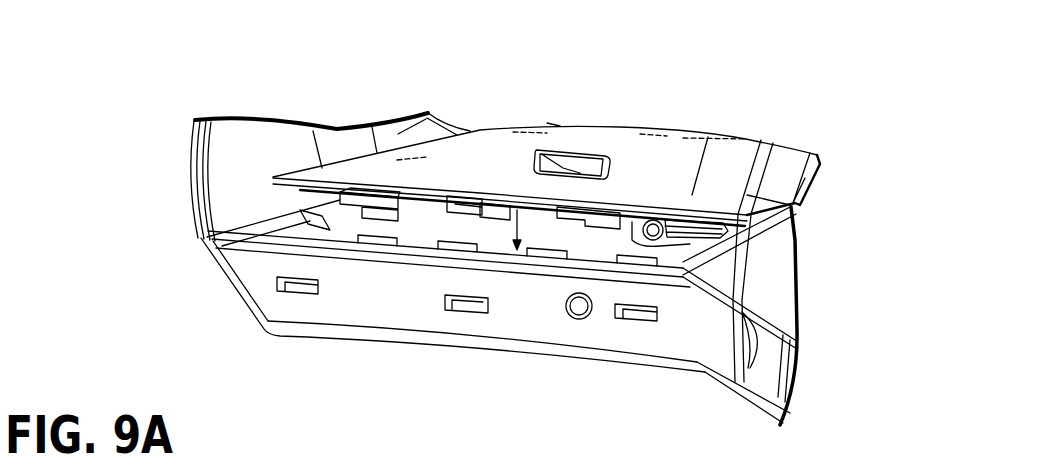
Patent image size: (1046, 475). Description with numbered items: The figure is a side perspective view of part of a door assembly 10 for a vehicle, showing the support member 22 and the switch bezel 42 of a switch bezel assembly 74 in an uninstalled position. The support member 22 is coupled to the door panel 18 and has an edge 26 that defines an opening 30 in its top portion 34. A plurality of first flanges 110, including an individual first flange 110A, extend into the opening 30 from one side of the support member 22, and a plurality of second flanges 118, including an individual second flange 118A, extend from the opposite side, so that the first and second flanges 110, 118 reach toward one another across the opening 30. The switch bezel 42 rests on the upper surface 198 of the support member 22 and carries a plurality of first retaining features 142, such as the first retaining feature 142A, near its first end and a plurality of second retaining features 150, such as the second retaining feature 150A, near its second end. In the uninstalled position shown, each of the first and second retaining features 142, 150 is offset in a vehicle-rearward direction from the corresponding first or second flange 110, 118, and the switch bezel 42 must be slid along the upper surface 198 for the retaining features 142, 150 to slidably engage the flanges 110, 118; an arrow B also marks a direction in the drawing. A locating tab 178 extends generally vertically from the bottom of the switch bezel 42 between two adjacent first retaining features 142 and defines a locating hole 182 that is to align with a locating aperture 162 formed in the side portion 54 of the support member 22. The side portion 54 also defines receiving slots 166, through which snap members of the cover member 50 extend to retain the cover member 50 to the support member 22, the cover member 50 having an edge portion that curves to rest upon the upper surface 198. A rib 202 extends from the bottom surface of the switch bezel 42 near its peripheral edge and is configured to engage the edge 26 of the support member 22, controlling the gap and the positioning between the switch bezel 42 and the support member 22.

The door assembly 10 is at (724, 85).
The door panel 18 is at (235, 117).
The support member 22 is at (503, 338).
The edge 26 is at (800, 276).
The opening 30 is at (331, 227).
The top portion 34 is at (258, 231).
The switch bezel 42 is at (673, 172).
The cover member 50 is at (758, 385).
The side portion 54 is at (267, 300).
The switch bezel assembly 74 is at (814, 350).
The first flanges 110 is at (377, 243).
The tab 110A is at (452, 242).
The second flanges 118 is at (402, 208).
The clip 118A is at (360, 192).
The first retaining features 142 is at (724, 248).
The first retaining feature 142A is at (697, 262).
The second retaining features 150 is at (640, 112).
The hidden edge 150A is at (547, 123).
The locating aperture 162 is at (573, 320).
The receiving slots 166 is at (620, 324).
The locating tab 178 is at (665, 296).
The locating hole 182 is at (665, 215).
The upper surface 198 is at (272, 240).
The rib 202 is at (810, 197).
The direction B is at (804, 244).